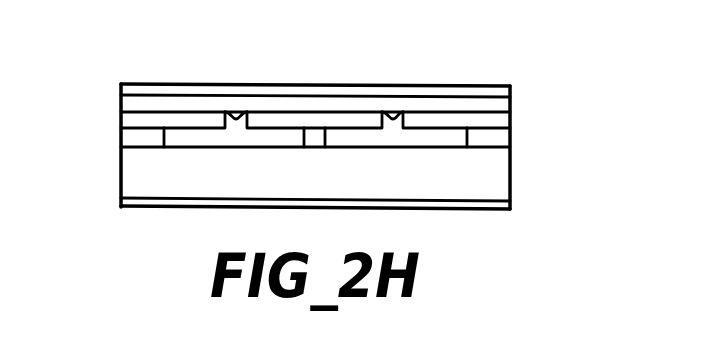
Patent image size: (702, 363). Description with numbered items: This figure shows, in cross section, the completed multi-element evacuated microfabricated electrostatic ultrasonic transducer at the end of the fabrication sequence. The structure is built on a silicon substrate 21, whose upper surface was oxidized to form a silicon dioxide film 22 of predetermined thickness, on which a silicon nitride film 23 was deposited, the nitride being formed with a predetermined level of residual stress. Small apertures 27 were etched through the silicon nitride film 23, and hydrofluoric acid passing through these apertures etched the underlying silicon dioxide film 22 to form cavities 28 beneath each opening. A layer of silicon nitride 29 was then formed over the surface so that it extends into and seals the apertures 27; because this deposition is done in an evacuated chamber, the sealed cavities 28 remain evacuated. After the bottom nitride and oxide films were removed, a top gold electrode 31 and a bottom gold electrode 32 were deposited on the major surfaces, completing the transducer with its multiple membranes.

The silicon substrate 21 is at (145, 173).
The silicon dioxide film 22 is at (133, 137).
The silicon nitride film 23 is at (500, 122).
The apertures 27 is at (391, 120).
The cavities 28 is at (184, 135).
The silicon nitride layer 29 is at (260, 103).
The top gold electrode 31 is at (477, 88).
The bottom gold electrode 32 is at (500, 204).